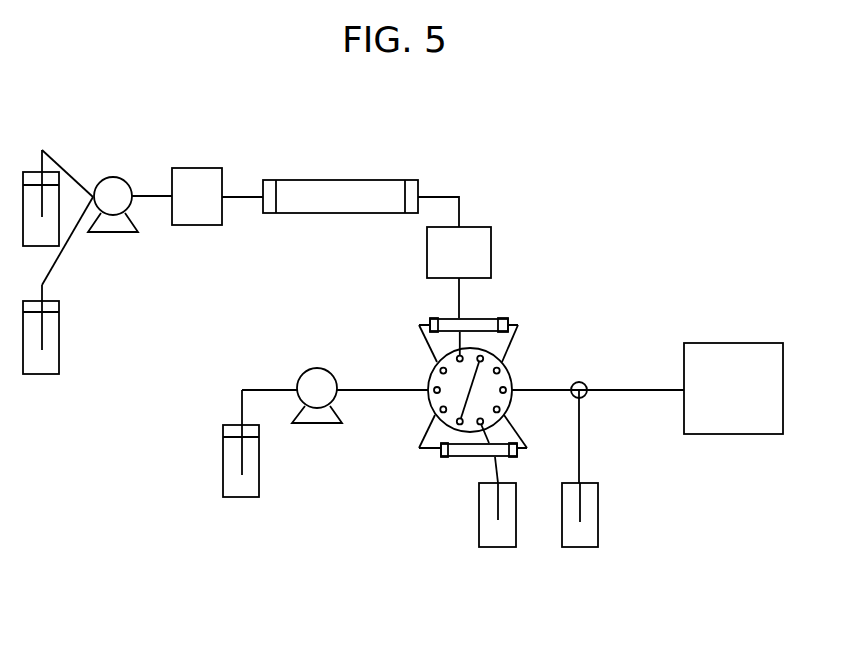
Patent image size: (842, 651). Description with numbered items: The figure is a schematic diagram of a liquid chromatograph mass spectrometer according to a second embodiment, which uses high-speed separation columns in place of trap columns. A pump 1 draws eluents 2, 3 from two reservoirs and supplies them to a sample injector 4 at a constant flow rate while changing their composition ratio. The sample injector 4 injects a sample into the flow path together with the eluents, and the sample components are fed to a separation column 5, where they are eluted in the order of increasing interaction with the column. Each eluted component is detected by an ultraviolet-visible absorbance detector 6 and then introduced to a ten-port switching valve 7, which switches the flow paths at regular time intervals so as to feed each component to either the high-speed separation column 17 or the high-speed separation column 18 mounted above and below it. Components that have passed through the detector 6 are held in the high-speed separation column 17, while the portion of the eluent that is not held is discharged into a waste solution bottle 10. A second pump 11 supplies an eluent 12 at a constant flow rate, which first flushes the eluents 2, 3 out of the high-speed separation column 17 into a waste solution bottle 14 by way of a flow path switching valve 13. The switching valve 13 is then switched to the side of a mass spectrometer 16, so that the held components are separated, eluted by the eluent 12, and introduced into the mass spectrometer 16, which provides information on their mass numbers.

The pump 1 is at (115, 176).
The eluent 2 is at (33, 170).
The eluent 3 is at (35, 375).
The sample injector 4 is at (195, 168).
The separation column 5 is at (328, 180).
The ultraviolet-visible absorbance detector 6 is at (477, 227).
The 10-port switching valve 7 is at (507, 370).
The waste solution bottle 10 is at (498, 547).
The pump 11 is at (318, 423).
The eluent 12 is at (223, 470).
The flow path switching valve 13 is at (582, 382).
The waste solution bottle 14 is at (580, 548).
The mass spectrometer 16 is at (730, 343).
The high-speed separation column 17 is at (440, 318).
The high-speed separation column 18 is at (460, 457).